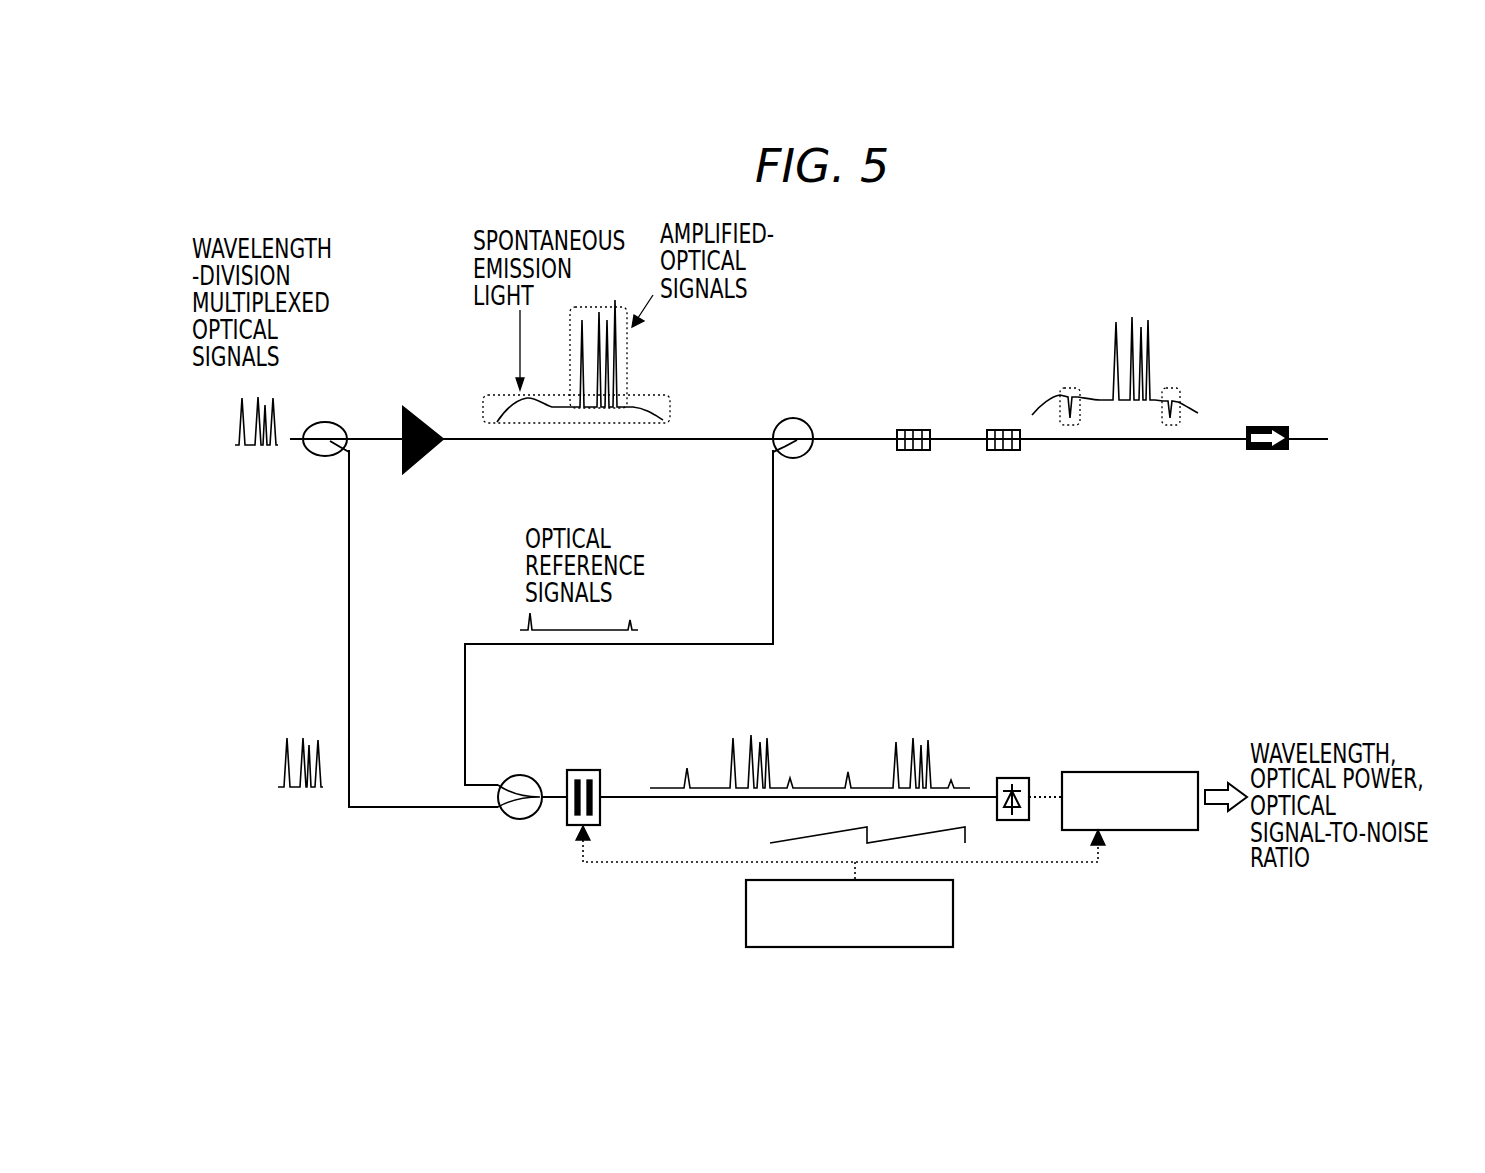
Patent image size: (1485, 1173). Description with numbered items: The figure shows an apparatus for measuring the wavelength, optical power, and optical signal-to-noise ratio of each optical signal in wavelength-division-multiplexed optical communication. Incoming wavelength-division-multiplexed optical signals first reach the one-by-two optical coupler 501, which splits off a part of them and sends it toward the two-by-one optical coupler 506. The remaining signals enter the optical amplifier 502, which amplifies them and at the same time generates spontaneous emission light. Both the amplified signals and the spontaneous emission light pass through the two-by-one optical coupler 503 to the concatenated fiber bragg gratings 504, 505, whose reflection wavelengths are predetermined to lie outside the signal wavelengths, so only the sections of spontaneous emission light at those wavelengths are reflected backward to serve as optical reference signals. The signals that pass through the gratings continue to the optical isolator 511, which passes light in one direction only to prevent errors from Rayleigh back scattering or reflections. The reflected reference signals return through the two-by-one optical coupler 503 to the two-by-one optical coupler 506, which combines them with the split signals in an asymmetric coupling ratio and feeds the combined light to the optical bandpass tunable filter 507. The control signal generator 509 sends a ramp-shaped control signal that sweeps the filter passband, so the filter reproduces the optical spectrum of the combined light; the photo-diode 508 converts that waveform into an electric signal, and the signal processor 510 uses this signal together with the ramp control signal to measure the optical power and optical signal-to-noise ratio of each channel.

The 1×2 optical coupler 501 is at (322, 424).
The optical amplifier 502 is at (420, 463).
The 2×1 optical coupler 503 is at (793, 418).
The fiber bragg grating 504 is at (912, 452).
The fiber bragg grating 505 is at (1003, 452).
The 2×1 optical coupler 506 is at (518, 775).
The optical bandpass tunable filter 507 is at (585, 770).
The photo-diode 508 is at (1012, 778).
The control signal generator 509 is at (953, 912).
The signal processor 510 is at (1112, 772).
The optical isolator 511 is at (1265, 452).